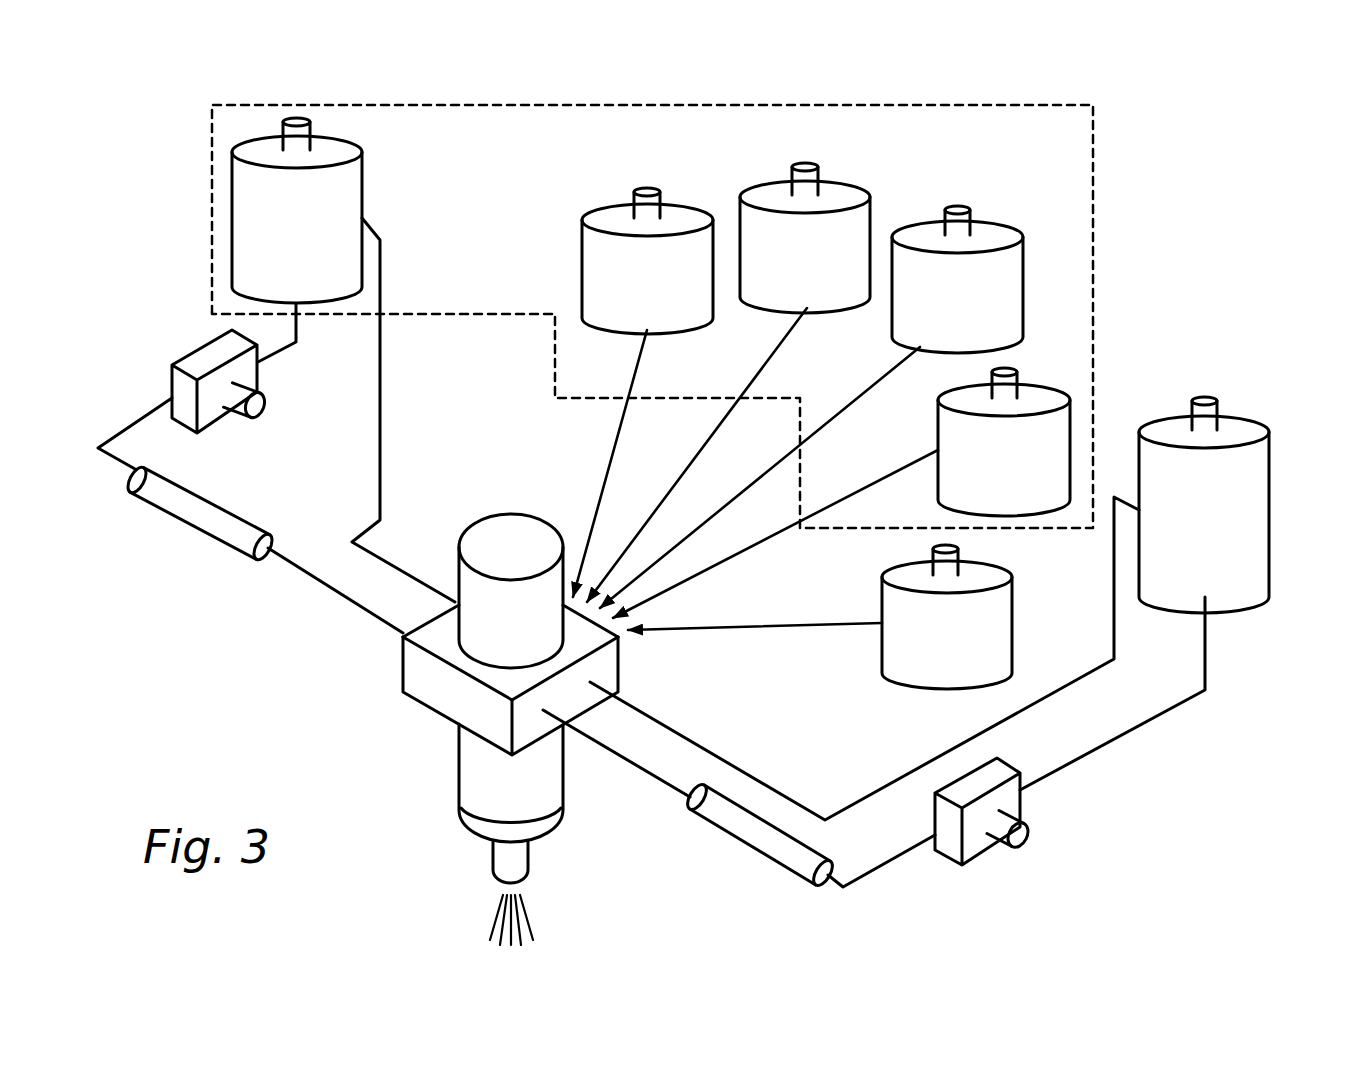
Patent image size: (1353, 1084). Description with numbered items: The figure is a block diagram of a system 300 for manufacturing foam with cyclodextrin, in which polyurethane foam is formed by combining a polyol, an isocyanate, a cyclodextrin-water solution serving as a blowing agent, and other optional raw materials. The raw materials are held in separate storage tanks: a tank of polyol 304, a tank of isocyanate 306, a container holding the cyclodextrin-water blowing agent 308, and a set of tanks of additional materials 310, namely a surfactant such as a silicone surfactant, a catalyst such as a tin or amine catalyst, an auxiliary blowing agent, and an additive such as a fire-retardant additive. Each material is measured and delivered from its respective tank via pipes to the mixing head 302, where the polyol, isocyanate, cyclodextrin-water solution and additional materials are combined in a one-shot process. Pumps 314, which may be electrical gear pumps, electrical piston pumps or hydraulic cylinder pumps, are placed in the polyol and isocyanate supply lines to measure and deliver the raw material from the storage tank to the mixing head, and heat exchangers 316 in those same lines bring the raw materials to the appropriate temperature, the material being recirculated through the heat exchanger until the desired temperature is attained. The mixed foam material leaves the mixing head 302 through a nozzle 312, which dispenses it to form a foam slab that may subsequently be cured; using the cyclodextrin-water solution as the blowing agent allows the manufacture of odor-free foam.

The foam dispensing system 300 is at (1208, 242).
The mixing head 302 is at (450, 690).
The polyol 304 is at (351, 185).
The isocyanate 306 is at (1238, 430).
The blowing agent 308 is at (932, 682).
The additional materials 310 is at (613, 215).
The nozzle 312 is at (502, 860).
The pumps 314 is at (205, 355).
The heat exchangers 316 is at (198, 513).